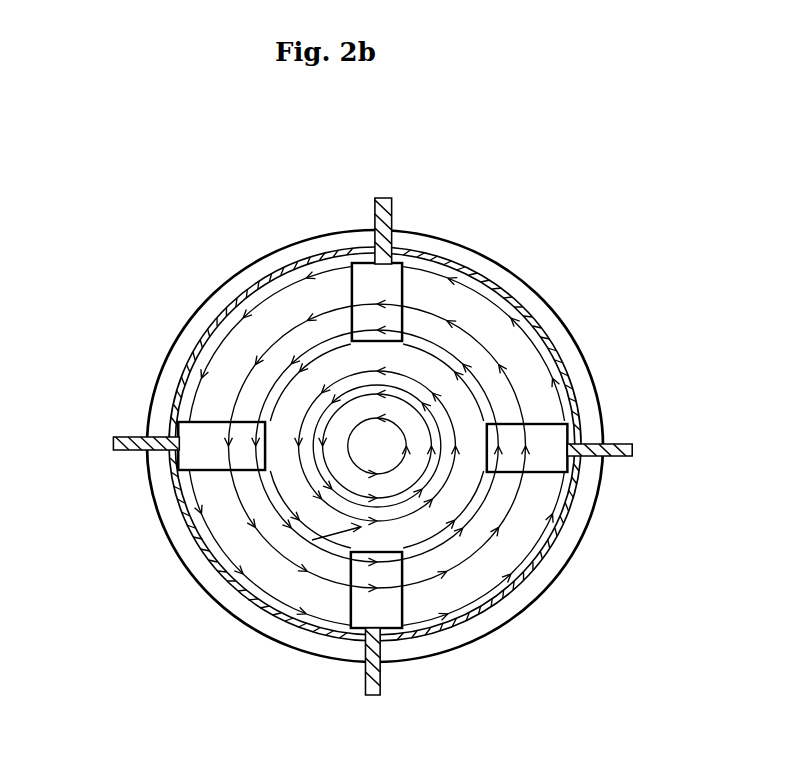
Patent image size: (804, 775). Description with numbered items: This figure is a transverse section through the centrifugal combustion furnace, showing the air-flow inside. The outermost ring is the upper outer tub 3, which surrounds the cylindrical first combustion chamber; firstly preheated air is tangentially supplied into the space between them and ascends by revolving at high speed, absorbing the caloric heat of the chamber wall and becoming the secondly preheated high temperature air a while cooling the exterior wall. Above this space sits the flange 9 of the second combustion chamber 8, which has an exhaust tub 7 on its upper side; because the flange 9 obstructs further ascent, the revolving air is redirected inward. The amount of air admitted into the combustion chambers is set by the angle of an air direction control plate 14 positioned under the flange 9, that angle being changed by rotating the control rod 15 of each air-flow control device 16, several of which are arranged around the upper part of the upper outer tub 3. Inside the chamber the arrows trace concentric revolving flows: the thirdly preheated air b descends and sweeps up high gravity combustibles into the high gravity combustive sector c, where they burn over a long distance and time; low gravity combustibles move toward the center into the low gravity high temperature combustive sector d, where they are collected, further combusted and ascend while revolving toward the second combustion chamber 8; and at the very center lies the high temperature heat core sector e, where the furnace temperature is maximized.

The upper outer tub 3 is at (195, 578).
The exhaust tub 7 is at (331, 415).
The second combustion chamber 8 is at (279, 400).
The flange 9 is at (165, 362).
The air direction control plate 14 is at (168, 500).
The control rod 15 is at (130, 452).
The air-flow control device 16 is at (128, 427).
The secondly preheated high temperature air a is at (380, 629).
The thirdly preheated air b is at (376, 590).
The high gravity combustive sector c is at (373, 540).
The low gravity high temperature combustive sector d is at (375, 488).
The high temperature heat core sector e is at (378, 446).